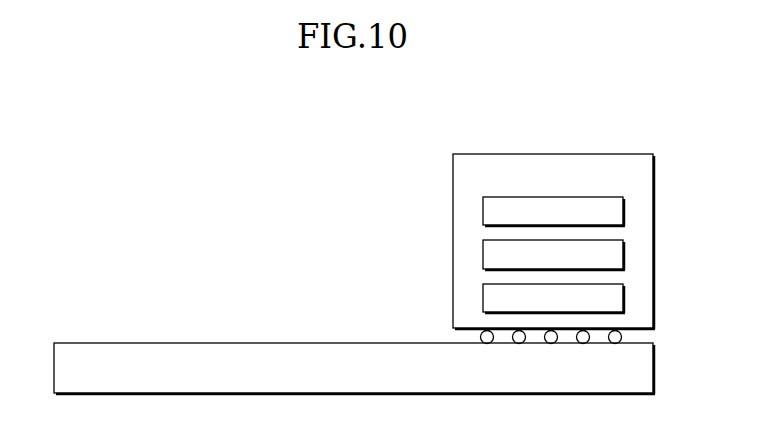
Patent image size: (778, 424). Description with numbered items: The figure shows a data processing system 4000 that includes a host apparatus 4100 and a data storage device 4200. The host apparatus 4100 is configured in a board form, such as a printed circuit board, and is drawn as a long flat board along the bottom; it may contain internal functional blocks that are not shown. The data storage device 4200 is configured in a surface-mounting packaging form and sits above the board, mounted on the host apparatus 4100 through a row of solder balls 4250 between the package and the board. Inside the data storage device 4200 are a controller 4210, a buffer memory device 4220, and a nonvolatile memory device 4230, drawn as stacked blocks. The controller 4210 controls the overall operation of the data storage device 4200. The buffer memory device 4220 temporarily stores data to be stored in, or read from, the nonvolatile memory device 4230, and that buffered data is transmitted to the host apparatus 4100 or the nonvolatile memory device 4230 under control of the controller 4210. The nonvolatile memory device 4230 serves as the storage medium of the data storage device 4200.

The data processing system 4000 is at (135, 125).
The host apparatus 4100 is at (354, 368).
The data storage device 4200 is at (554, 241).
The controller 4210 is at (554, 211).
The buffer memory device 4220 is at (554, 255).
The nonvolatile memory device 4230 is at (554, 298).
The solder ball 4250 is at (632, 336).